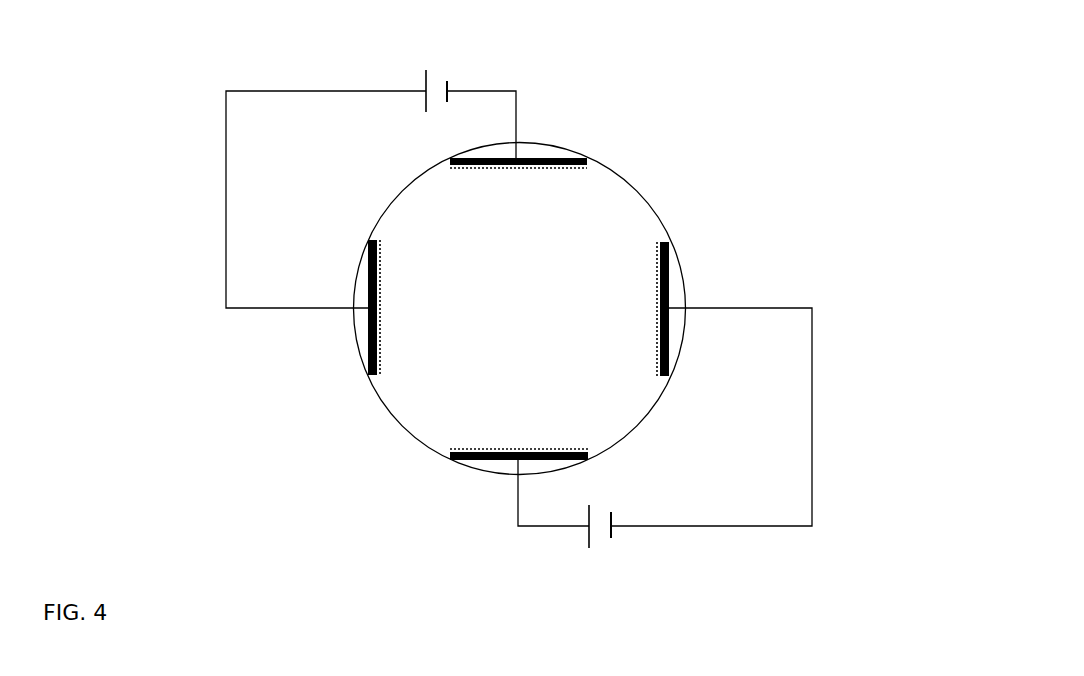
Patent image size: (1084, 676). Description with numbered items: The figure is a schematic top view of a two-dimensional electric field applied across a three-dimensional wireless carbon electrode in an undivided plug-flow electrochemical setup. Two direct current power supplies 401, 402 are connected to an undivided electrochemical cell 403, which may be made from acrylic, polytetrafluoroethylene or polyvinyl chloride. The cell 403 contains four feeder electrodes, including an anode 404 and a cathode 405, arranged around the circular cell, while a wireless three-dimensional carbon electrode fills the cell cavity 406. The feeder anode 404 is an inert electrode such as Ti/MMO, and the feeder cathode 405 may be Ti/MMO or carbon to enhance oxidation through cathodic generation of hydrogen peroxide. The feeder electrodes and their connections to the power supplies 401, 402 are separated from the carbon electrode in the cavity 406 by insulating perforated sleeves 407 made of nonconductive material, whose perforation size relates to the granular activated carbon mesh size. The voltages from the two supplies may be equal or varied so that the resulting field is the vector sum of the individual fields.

The direct current power supply 401 is at (371, 184).
The direct current power supply 402 is at (665, 428).
The undivided electrochemical cell 403 is at (478, 309).
The feeder anode 404 is at (574, 128).
The feeder cathode 405 is at (320, 328).
The cell cavity 406 is at (679, 259).
The insulating electrode perforated sleeve 407 is at (585, 418).